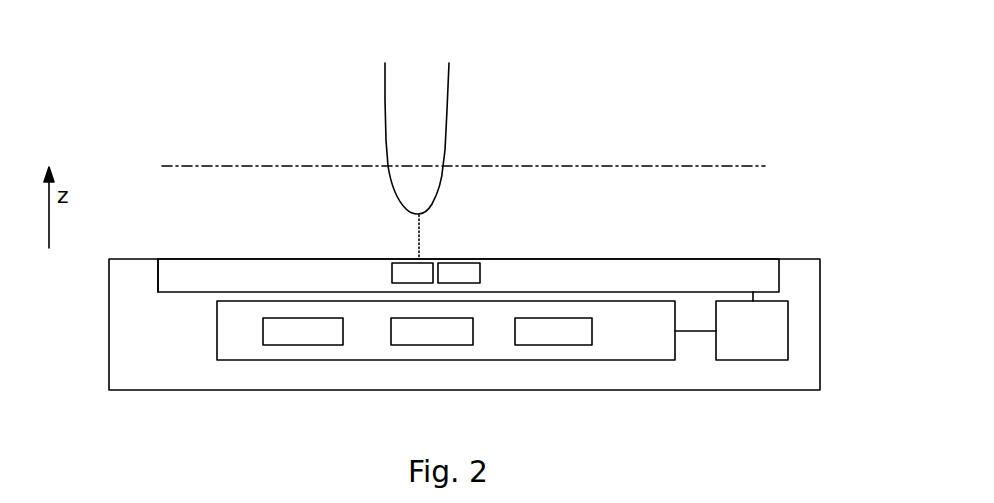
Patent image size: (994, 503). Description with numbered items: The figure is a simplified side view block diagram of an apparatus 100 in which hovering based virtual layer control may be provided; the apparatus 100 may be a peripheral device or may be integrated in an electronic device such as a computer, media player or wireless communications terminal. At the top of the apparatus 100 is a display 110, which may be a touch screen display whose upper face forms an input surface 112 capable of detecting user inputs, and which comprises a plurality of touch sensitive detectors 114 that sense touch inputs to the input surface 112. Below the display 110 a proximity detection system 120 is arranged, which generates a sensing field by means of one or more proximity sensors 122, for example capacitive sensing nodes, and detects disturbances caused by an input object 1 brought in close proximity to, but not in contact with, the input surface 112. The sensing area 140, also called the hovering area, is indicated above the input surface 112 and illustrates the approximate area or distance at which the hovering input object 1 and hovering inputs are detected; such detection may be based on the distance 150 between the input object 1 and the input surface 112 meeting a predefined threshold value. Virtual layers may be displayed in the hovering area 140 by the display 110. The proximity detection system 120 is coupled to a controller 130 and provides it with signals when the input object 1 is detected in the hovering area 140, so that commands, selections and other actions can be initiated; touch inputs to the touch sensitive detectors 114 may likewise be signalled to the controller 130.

The input object 1 is at (407, 128).
The apparatus 100 is at (810, 350).
The display 110 is at (165, 268).
The input surface 112 is at (243, 258).
The touch sensitive detectors 114 is at (459, 276).
The proximity detection system 120 is at (548, 354).
The proximity sensors 122 is at (273, 336).
The controller 130 is at (732, 354).
The sensing area 140 is at (740, 195).
The distance 150 is at (423, 235).